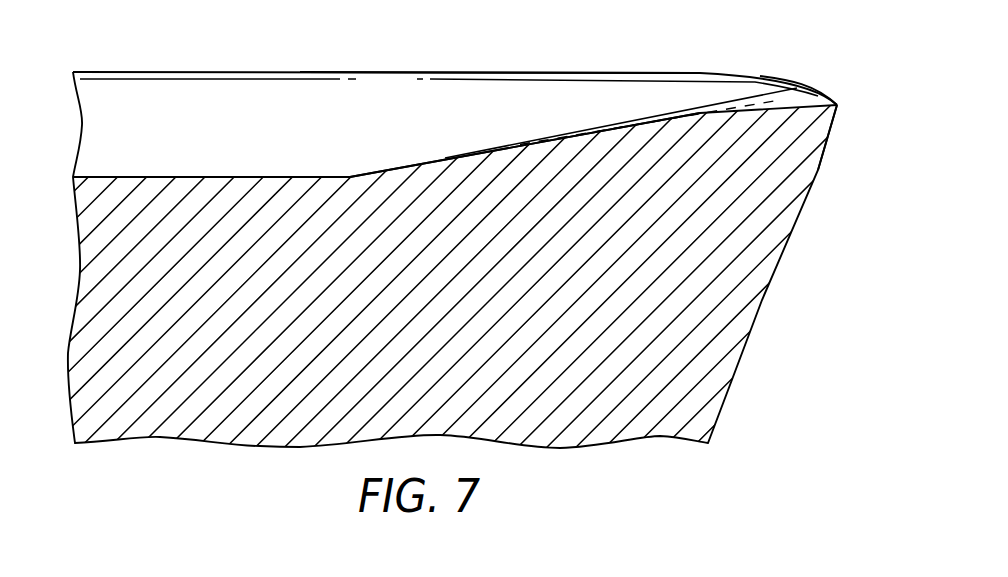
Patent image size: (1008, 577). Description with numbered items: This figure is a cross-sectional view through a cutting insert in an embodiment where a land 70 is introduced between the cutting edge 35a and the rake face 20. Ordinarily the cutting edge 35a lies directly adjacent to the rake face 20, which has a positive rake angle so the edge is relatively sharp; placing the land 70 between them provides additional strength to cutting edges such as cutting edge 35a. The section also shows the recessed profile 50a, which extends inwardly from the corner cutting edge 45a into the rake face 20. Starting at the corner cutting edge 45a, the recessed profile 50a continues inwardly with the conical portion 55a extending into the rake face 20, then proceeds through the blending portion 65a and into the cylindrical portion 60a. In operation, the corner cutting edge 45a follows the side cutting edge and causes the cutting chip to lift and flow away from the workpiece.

The rake face 20 is at (321, 134).
The side cutting edge 35a is at (228, 72).
The land 70 is at (452, 73).
The cylindrical portion 60a is at (597, 137).
The blending portion 65a is at (704, 119).
The recessed profile 50a is at (783, 108).
The conical portion 55a is at (822, 92).
The corner cutting edge 45a is at (842, 105).